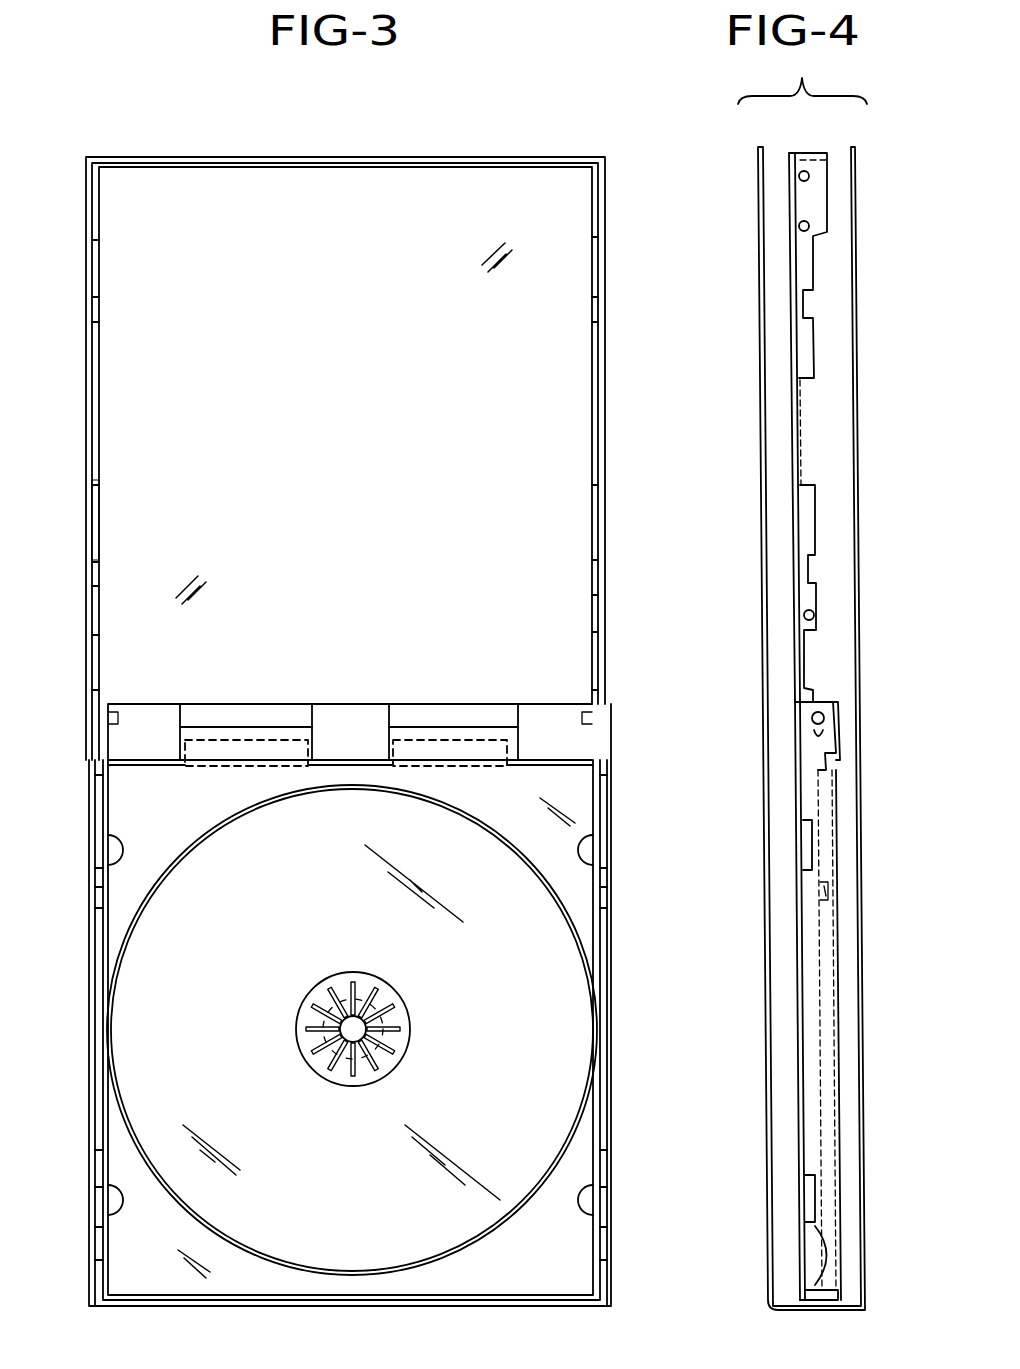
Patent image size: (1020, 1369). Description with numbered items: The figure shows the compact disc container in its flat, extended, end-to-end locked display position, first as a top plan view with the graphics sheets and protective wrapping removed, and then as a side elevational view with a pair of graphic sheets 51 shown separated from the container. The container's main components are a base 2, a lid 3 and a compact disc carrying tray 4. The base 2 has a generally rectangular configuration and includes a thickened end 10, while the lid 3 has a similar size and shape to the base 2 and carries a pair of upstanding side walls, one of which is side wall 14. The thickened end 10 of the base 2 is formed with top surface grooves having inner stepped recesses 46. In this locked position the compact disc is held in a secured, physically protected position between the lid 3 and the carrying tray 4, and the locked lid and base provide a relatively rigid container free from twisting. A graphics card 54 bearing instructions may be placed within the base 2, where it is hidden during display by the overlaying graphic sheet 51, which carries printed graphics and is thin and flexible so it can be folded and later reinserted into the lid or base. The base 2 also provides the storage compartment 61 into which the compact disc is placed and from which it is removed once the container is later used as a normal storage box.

In FIG. 3, the base 2 is at (177, 156).
In FIG. 3, the lid 3 is at (93, 1243).
In FIG. 3, the compact disc carrying tray 4 is at (225, 1057).
In FIG. 3, the thickened end 10 is at (138, 704).
In FIG. 4, the side wall 14 is at (816, 1036).
In FIG. 3, the inner stepped recesses 46 is at (240, 716).
In FIG. 4, the graphic sheet 51 is at (761, 391).
In FIG. 3, the graphics card 54 is at (128, 496).
In FIG. 4, the storage compartment 61 is at (836, 615).